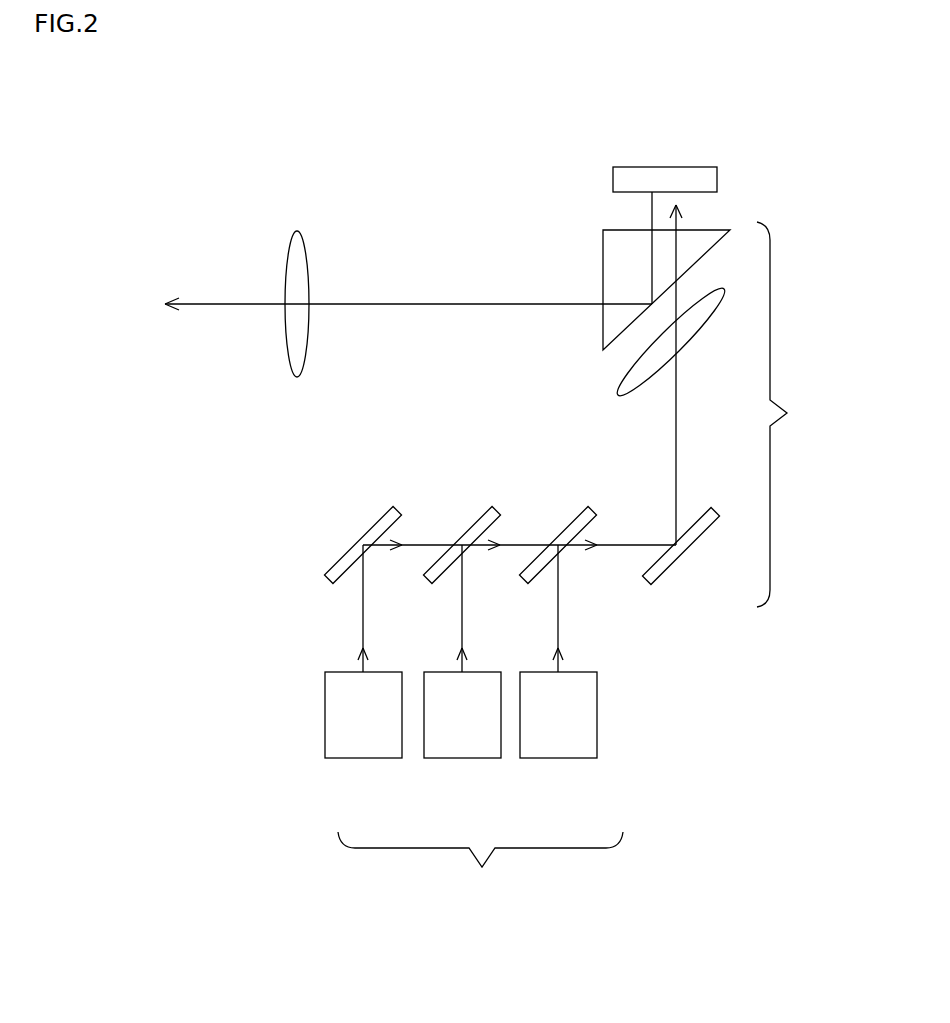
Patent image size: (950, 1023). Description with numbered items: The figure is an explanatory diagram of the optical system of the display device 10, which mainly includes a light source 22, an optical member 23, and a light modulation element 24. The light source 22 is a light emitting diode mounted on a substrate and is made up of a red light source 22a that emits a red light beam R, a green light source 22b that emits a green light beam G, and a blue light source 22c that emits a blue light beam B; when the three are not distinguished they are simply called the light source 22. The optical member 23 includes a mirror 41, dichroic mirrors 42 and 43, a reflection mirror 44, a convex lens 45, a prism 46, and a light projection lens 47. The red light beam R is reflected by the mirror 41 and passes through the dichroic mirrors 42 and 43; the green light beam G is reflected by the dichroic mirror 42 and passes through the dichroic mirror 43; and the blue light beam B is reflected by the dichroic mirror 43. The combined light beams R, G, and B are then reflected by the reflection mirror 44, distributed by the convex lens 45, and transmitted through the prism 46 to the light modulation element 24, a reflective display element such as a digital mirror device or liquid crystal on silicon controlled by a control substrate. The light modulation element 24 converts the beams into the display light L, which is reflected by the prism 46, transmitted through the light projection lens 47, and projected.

The display device 10 is at (209, 147).
The display light L is at (440, 303).
The light projection lens 47 is at (295, 229).
The light modulation element 24 is at (665, 167).
The prism 46 is at (603, 240).
The convex lens 45 is at (618, 386).
The optical member 23 is at (791, 414).
The mirror 41 is at (360, 528).
The dichroic mirror 42 is at (460, 528).
The dichroic mirror 43 is at (556, 528).
The reflection mirror 44 is at (690, 550).
The red light beam R is at (362, 613).
The green light beam G is at (461, 613).
The blue light beam B is at (557, 613).
The red light source 22a is at (366, 758).
The green light source 22b is at (465, 758).
The blue light source 22c is at (563, 758).
The light source 22 is at (480, 867).